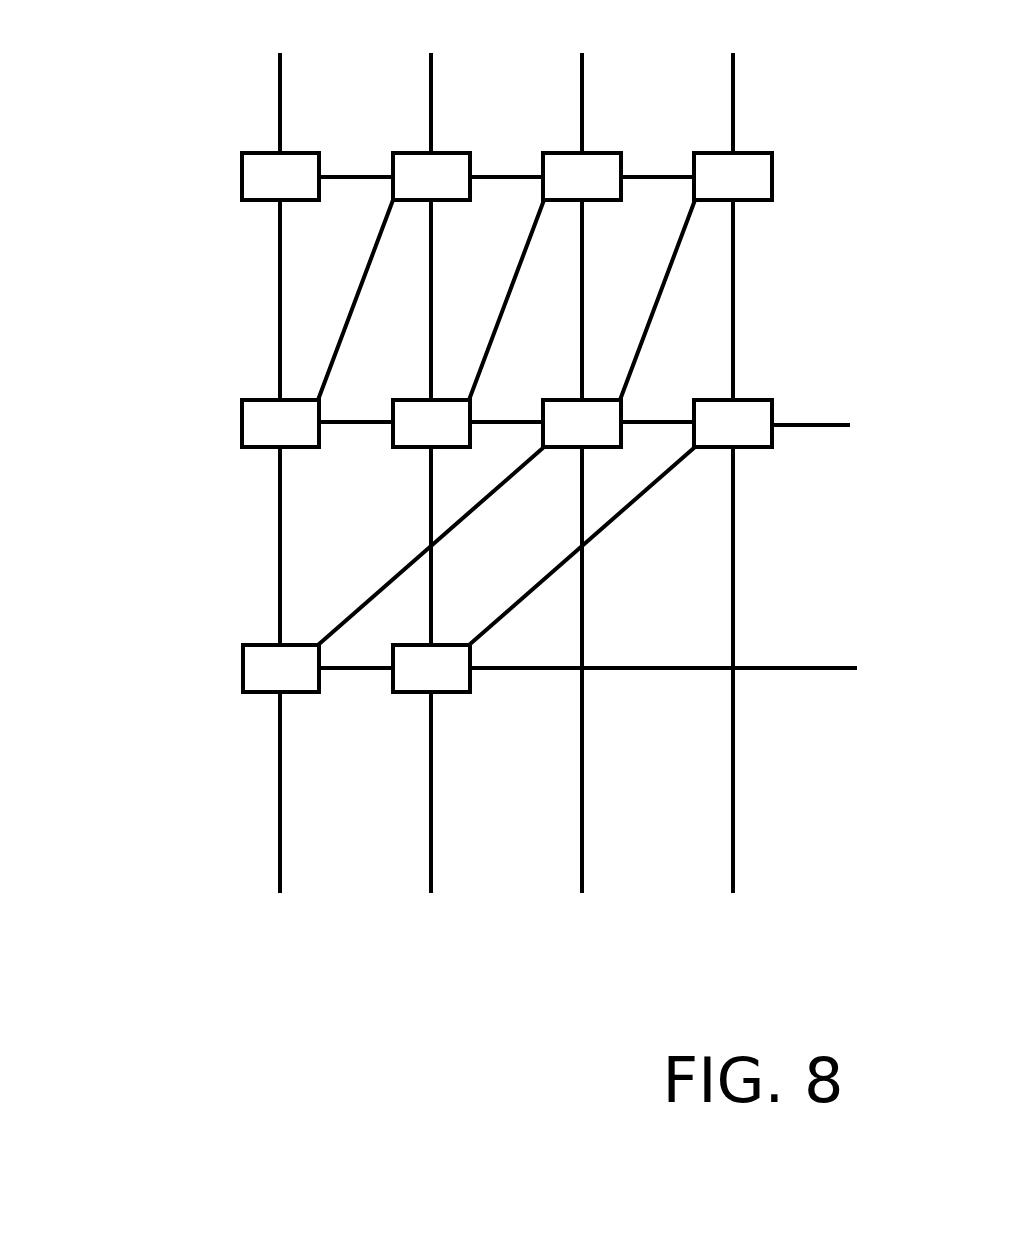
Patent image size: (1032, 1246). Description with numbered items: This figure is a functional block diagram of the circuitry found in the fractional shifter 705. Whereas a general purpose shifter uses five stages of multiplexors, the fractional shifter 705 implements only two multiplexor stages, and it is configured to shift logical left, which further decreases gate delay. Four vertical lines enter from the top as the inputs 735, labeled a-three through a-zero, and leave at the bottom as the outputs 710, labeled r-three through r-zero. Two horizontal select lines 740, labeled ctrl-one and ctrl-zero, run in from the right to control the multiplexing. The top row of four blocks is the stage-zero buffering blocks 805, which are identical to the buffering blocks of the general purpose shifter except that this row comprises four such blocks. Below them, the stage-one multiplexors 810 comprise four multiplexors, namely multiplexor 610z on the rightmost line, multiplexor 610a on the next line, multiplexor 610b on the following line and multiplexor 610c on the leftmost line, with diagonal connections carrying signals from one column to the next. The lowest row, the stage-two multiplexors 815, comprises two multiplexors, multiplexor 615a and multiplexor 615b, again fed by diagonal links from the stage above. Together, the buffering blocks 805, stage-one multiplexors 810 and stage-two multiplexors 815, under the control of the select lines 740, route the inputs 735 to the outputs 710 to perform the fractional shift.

The fractional shifter 705 is at (463, 538).
The outputs 710 is at (214, 936).
The inputs 735 is at (215, 75).
The select lines 740 is at (889, 734).
The stage 0 buffering blocks 805 is at (188, 178).
The stage 1 multiplexors 810 is at (188, 419).
The stage two multiplexors 815 is at (188, 667).
The multiplexor 610a is at (621, 427).
The multiplexor 610b is at (393, 437).
The multiplexor 610c is at (242, 437).
The multiplexor 610z is at (772, 450).
The multiplexor 615a is at (393, 688).
The multiplexor 615b is at (243, 670).